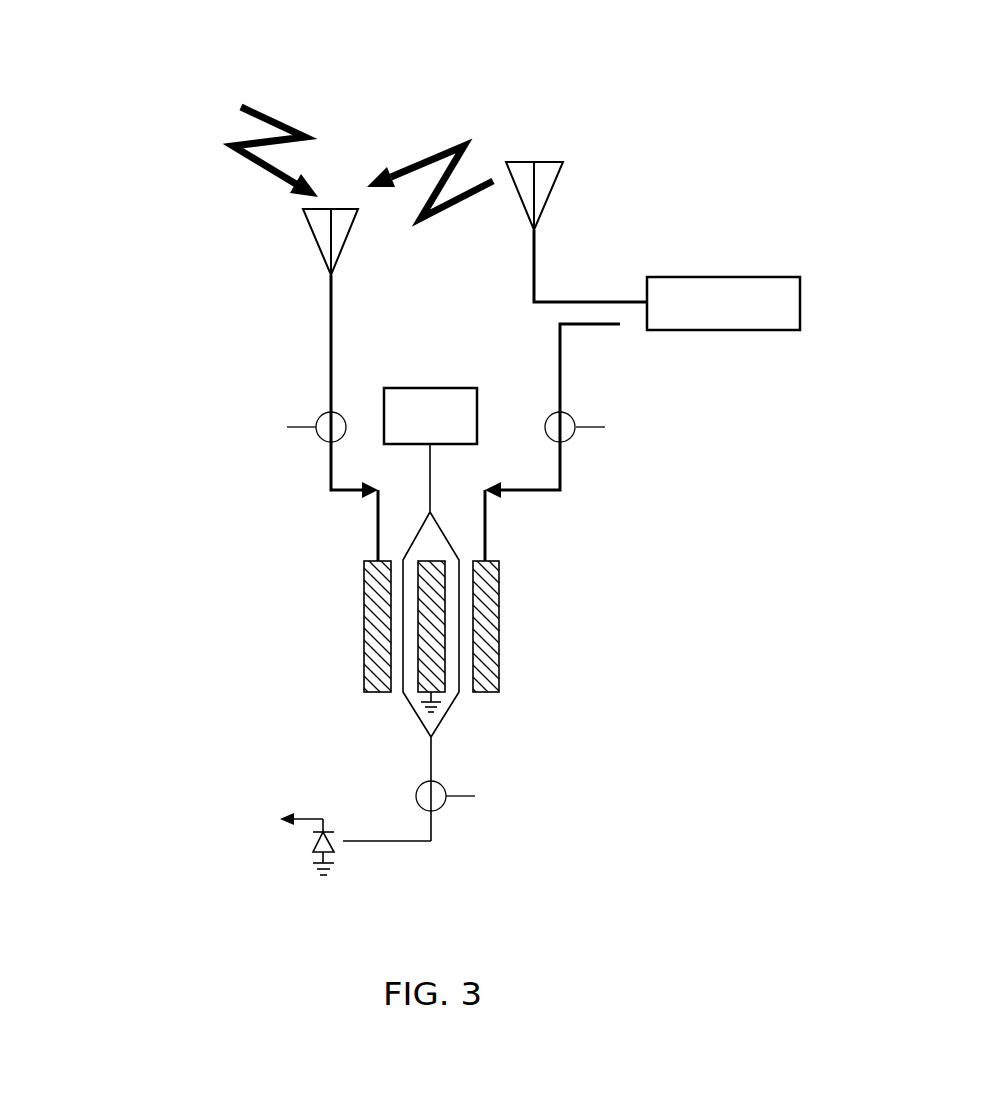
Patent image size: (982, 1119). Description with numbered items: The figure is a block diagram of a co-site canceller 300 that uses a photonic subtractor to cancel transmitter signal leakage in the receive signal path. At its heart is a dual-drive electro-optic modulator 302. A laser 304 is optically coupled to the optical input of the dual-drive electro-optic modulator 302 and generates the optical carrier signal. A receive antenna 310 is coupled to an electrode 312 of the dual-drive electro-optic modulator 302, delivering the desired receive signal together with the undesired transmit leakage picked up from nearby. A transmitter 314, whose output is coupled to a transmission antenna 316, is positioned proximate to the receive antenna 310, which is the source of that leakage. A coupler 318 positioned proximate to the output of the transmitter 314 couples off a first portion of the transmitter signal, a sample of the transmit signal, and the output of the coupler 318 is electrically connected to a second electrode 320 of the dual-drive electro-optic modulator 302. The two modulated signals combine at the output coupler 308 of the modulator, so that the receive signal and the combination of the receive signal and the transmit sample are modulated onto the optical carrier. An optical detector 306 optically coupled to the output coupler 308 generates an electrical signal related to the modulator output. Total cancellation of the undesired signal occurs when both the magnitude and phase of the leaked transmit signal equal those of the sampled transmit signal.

The co-site canceller 300 is at (683, 64).
The dual-drive electro-optic modulator 302 is at (617, 595).
The laser 304 is at (430, 388).
The optical detector 306 is at (351, 853).
The output coupler 308 is at (431, 750).
The receive antenna 310 is at (351, 208).
The electrode 312 is at (364, 627).
The transmitter 314 is at (723, 277).
The transmission antenna 316 is at (543, 161).
The coupler 318 is at (586, 336).
The electrode 320 is at (500, 627).